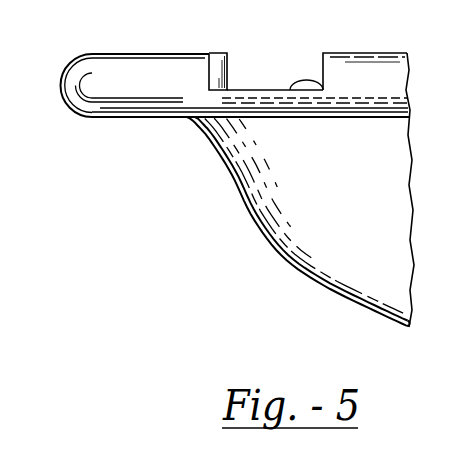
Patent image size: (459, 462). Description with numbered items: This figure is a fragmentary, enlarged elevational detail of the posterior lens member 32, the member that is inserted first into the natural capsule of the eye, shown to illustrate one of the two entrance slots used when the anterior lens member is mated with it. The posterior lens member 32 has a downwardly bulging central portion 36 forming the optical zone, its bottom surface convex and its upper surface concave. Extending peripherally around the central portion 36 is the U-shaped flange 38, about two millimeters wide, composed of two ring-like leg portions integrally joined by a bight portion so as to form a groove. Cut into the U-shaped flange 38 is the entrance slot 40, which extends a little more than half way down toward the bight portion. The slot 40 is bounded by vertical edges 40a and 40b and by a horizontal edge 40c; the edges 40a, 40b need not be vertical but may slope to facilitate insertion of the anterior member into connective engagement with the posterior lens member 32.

The posterior lens member 32 is at (277, 266).
The central portion 36 is at (323, 279).
The U-shaped flange 38 is at (84, 122).
The entrance slot 40 is at (272, 78).
The vertical edge 40a is at (220, 63).
The vertical edge 40b is at (323, 70).
The horizontal edge 40c is at (323, 92).